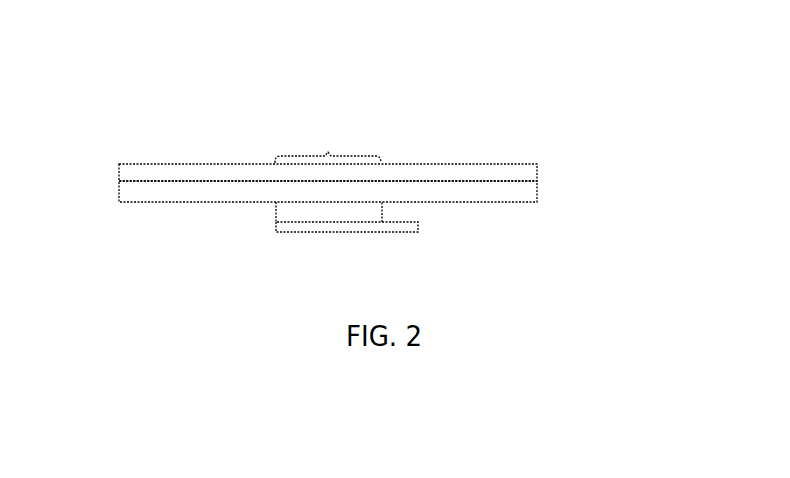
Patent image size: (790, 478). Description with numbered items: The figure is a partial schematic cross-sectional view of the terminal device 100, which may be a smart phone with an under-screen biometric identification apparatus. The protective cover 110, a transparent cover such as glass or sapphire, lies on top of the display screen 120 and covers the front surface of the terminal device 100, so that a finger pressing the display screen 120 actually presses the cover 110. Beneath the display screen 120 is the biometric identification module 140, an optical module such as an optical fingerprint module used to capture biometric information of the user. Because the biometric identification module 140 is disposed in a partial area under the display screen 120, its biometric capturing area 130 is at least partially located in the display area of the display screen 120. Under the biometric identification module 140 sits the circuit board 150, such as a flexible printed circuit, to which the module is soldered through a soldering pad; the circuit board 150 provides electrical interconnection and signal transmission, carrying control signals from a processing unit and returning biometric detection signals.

The terminal device 100 is at (336, 77).
The protective cover 110 is at (525, 174).
The display screen 120 is at (526, 190).
The biometric capturing area 130 is at (328, 142).
The biometric identification module 140 is at (382, 210).
The circuit board 150 is at (402, 226).